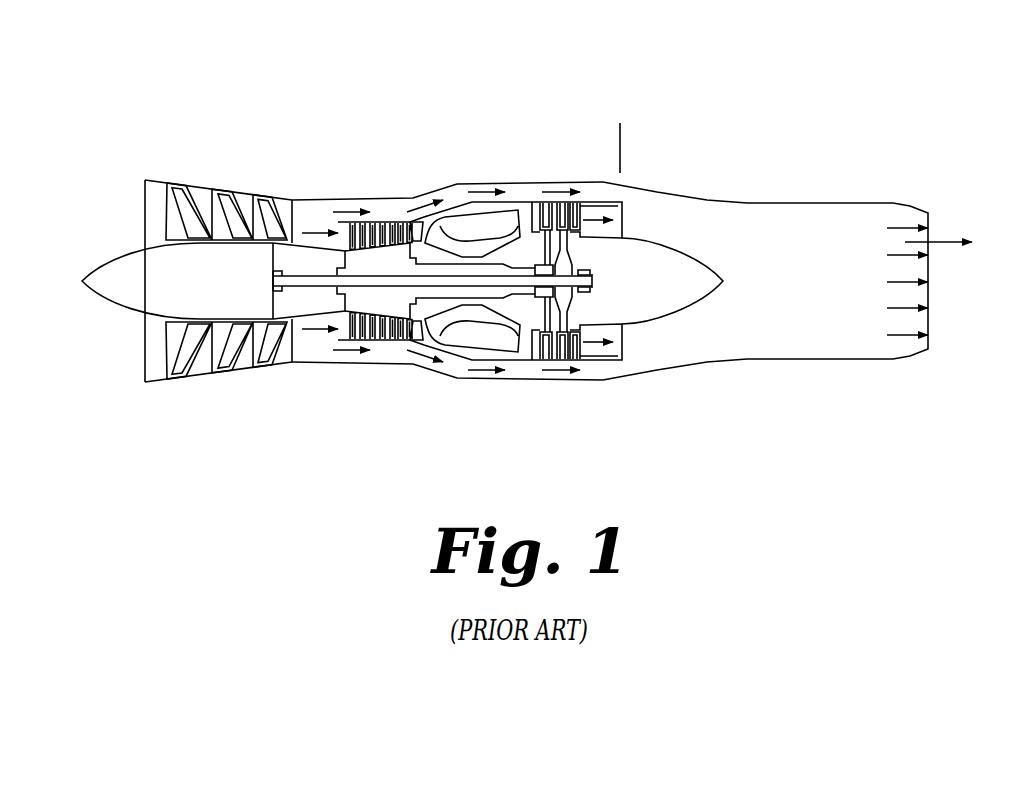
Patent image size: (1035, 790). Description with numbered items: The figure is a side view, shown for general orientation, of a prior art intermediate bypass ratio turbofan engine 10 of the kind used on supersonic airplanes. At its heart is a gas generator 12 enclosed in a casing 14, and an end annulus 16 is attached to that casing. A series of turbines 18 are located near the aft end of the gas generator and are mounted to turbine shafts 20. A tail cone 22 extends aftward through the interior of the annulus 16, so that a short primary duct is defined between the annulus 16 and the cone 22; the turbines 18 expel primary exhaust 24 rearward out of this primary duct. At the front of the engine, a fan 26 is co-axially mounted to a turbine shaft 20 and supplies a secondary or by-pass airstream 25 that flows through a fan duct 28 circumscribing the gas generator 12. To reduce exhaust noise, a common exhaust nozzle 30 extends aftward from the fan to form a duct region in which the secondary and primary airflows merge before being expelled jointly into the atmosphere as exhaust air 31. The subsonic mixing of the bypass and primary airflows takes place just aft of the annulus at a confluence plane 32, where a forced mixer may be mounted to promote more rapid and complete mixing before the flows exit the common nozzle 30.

The intermediate bypass ratio turbofan engine 10 is at (571, 97).
The gas generator 12 is at (487, 233).
The casing 14 is at (467, 362).
The end annulus 16 is at (612, 357).
The turbines 18 is at (577, 222).
The turbine shafts 20 is at (317, 280).
The tail cone 22 is at (690, 270).
The primary exhaust 24 is at (588, 343).
The secondary or by-pass airstream 25 is at (345, 214).
The fan 26 is at (238, 187).
The fan duct 28 is at (455, 193).
The common exhaust nozzle 30 is at (790, 203).
The exhaust air 31 is at (943, 242).
The confluence plane 32 is at (625, 145).